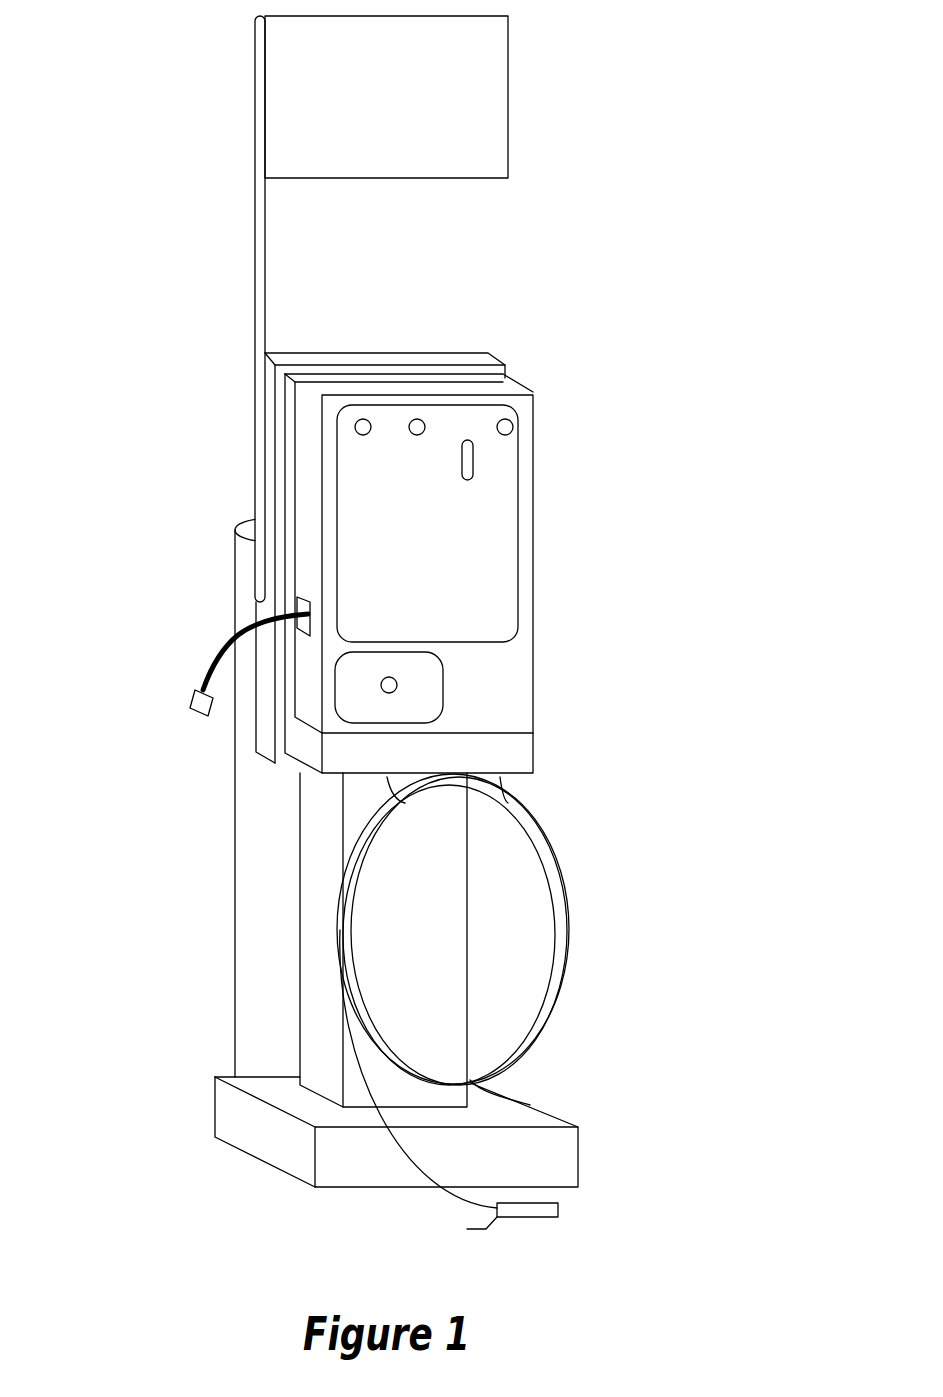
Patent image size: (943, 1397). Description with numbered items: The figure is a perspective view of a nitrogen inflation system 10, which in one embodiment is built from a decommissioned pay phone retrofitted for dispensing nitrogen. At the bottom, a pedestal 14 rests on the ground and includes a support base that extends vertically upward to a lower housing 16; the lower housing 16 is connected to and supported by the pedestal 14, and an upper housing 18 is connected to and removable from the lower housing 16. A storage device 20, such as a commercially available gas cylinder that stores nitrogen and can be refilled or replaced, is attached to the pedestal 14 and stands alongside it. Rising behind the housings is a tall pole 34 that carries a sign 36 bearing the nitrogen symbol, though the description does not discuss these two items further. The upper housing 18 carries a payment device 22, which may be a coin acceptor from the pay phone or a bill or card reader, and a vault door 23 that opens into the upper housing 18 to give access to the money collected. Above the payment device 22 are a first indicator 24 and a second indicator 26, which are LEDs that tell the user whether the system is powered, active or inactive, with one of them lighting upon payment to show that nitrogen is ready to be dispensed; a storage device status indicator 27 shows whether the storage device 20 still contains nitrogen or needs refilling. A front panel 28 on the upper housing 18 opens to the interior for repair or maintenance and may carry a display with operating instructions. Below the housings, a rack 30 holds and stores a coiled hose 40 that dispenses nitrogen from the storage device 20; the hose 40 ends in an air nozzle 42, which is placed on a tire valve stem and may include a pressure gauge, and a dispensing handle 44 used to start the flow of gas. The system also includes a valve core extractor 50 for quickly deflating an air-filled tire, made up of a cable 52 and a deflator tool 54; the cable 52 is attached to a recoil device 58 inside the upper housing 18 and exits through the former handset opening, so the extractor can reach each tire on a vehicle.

The nitrogen inflation system 10 is at (690, 118).
The pedestal 14 is at (468, 940).
The lower housing 16 is at (449, 536).
The upper housing 18 is at (536, 412).
The storage device 20 is at (257, 968).
The payment device 22 is at (475, 462).
The vault door 23 is at (389, 677).
The first indicator 24 is at (363, 411).
The second indicator 26 is at (417, 411).
The storage device status indicator 27 is at (507, 411).
The front panel 28 is at (498, 521).
The rack 30 is at (420, 836).
The mast pole 34 is at (253, 312).
The N2 sign 36 is at (507, 96).
The hose 40 is at (489, 1023).
The air nozzle 42 is at (505, 1218).
The dispensing handle 44 is at (478, 1229).
The valve core extractor 50 is at (108, 711).
The cable 52 is at (225, 648).
The deflator tool 54 is at (195, 714).
The recoil device 58 is at (304, 597).